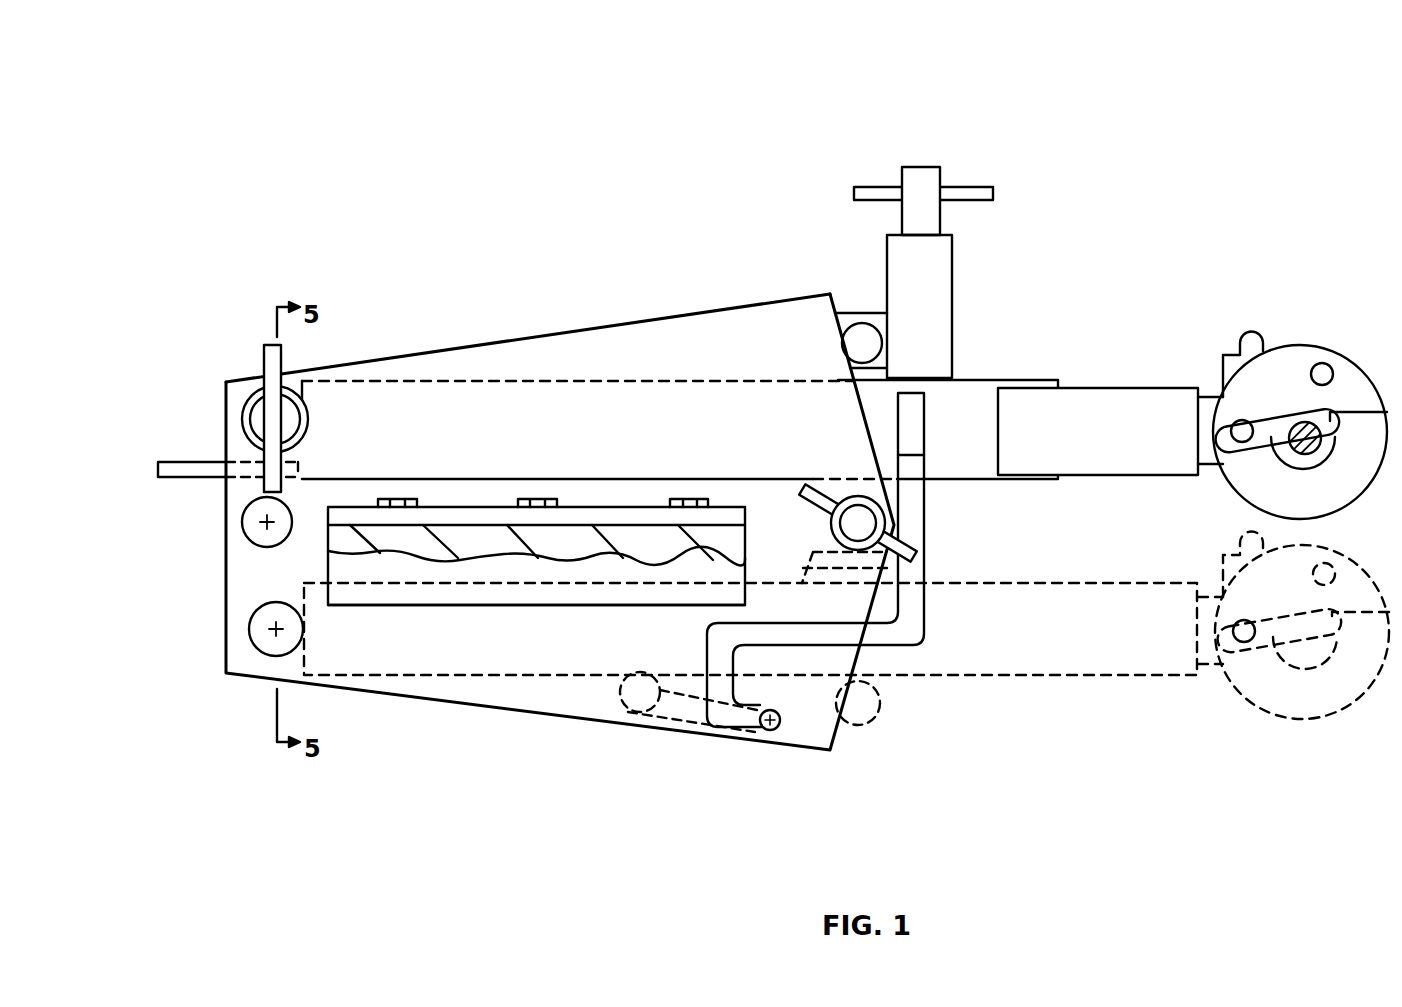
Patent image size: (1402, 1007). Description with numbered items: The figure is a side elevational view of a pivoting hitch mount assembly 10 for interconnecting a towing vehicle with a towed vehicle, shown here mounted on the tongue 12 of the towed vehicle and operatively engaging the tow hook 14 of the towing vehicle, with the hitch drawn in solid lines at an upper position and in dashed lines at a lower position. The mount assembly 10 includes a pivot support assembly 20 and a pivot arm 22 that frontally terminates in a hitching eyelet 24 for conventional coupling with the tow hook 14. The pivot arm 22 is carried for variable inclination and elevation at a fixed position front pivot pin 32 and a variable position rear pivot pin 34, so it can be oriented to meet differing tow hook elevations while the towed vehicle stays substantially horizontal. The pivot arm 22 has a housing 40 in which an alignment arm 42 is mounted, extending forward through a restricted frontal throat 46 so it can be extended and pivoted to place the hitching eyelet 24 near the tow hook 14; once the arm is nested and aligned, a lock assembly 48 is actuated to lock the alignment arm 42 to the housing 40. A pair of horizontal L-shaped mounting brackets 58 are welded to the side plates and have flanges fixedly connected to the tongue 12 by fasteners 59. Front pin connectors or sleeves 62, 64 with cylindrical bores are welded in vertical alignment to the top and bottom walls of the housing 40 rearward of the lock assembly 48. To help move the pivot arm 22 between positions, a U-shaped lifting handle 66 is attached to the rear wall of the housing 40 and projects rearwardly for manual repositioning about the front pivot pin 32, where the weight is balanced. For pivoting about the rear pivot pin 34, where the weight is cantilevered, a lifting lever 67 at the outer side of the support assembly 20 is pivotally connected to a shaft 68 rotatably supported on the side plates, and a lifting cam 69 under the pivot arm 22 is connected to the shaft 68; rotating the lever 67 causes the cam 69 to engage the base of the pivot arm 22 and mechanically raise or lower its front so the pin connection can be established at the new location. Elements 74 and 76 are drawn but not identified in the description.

The pivoting hitch mount assembly 10 is at (553, 287).
The tongue 12 is at (482, 545).
The tow hook 14 is at (1305, 430).
The pivot support assembly 20 is at (683, 310).
The pivot arm 22 is at (1045, 380).
The hitching eyelet 24 is at (1283, 348).
The front pivot pin 32 is at (883, 523).
The rear pivot pin 34 is at (250, 392).
The housing 40 is at (530, 380).
The alignment arm 42 is at (1127, 387).
The restricted frontal throat 46 is at (938, 268).
The lock assembly 48 is at (915, 165).
The L-shaped mounting brackets 58 is at (648, 603).
The fasteners 59 is at (692, 498).
The front pin connector or sleeve 62 is at (857, 322).
The front pin connector or sleeve 64 is at (863, 708).
The U-shaped lifting handle 66 is at (190, 462).
The lifting lever 67 is at (922, 638).
The shaft 68 is at (770, 730).
The lifting cam 69 is at (640, 702).
The fastener 74 is at (253, 533).
The fastener 76 is at (250, 626).